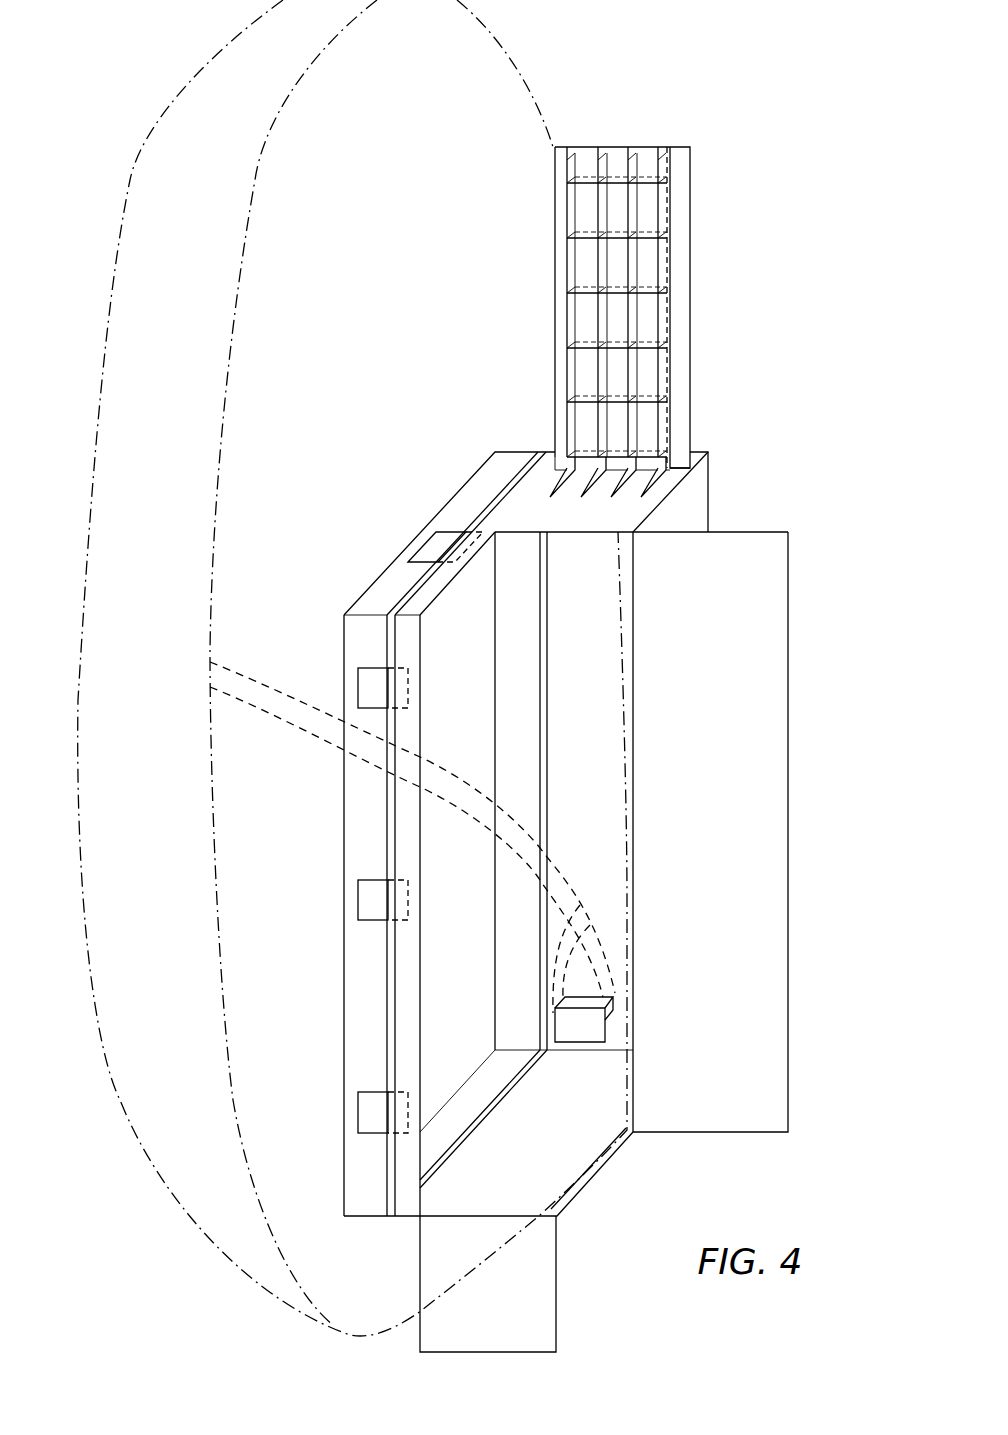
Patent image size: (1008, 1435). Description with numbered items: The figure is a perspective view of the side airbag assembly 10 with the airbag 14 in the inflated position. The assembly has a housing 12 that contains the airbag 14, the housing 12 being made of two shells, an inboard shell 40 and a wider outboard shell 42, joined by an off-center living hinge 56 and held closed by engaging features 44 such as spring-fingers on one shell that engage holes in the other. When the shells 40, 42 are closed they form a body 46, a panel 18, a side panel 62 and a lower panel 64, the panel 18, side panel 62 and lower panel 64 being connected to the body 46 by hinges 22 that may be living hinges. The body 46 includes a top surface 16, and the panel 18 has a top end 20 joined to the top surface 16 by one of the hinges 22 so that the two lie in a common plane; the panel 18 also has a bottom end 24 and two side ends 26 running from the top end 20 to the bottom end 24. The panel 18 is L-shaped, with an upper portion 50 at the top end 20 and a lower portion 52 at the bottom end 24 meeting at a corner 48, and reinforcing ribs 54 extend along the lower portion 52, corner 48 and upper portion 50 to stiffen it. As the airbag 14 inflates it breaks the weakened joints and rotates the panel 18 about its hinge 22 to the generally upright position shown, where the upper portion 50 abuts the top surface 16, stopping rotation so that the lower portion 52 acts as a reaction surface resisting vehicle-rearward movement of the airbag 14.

The side airbag assembly 10 is at (812, 153).
The housing 12 is at (730, 498).
The airbag 14 is at (148, 1205).
The top surface 16 is at (695, 452).
The panel 18 is at (710, 262).
The top end 20 is at (562, 530).
The hinge 22 is at (590, 534).
The bottom end 24 is at (620, 145).
The side ends 26 is at (553, 300).
The inboard shell 40 is at (356, 1217).
The outboard shell 42 is at (400, 1217).
The engaging features 44 is at (432, 555).
The body 46 is at (700, 478).
The corner 48 is at (573, 478).
The upper portion 50 is at (627, 521).
The lower portion 52 is at (692, 215).
The reinforcing ribs 54 is at (666, 183).
The hinge 56 is at (547, 717).
The side panel 62 is at (745, 1080).
The lower panel 64 is at (527, 1310).